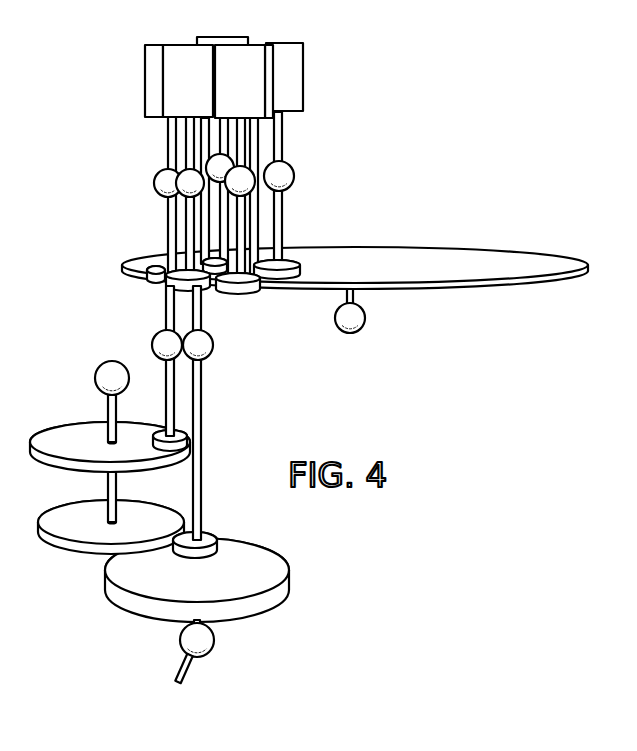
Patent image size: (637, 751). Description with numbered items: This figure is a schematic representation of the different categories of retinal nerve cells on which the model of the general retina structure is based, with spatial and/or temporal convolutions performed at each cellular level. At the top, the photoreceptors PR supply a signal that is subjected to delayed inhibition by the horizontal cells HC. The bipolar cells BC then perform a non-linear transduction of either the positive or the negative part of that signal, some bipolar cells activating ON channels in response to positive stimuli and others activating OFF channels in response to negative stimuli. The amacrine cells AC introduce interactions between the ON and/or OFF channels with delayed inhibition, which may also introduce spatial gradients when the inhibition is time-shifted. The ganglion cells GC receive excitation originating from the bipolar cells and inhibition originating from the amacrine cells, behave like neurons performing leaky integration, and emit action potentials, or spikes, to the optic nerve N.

The photoreceptors PR is at (279, 176).
The horizontal cells HC is at (350, 320).
The amacrine cells AC is at (110, 377).
The bipolar cells BC is at (163, 352).
The ganglion cells GC is at (197, 640).
The optic nerve N is at (175, 673).